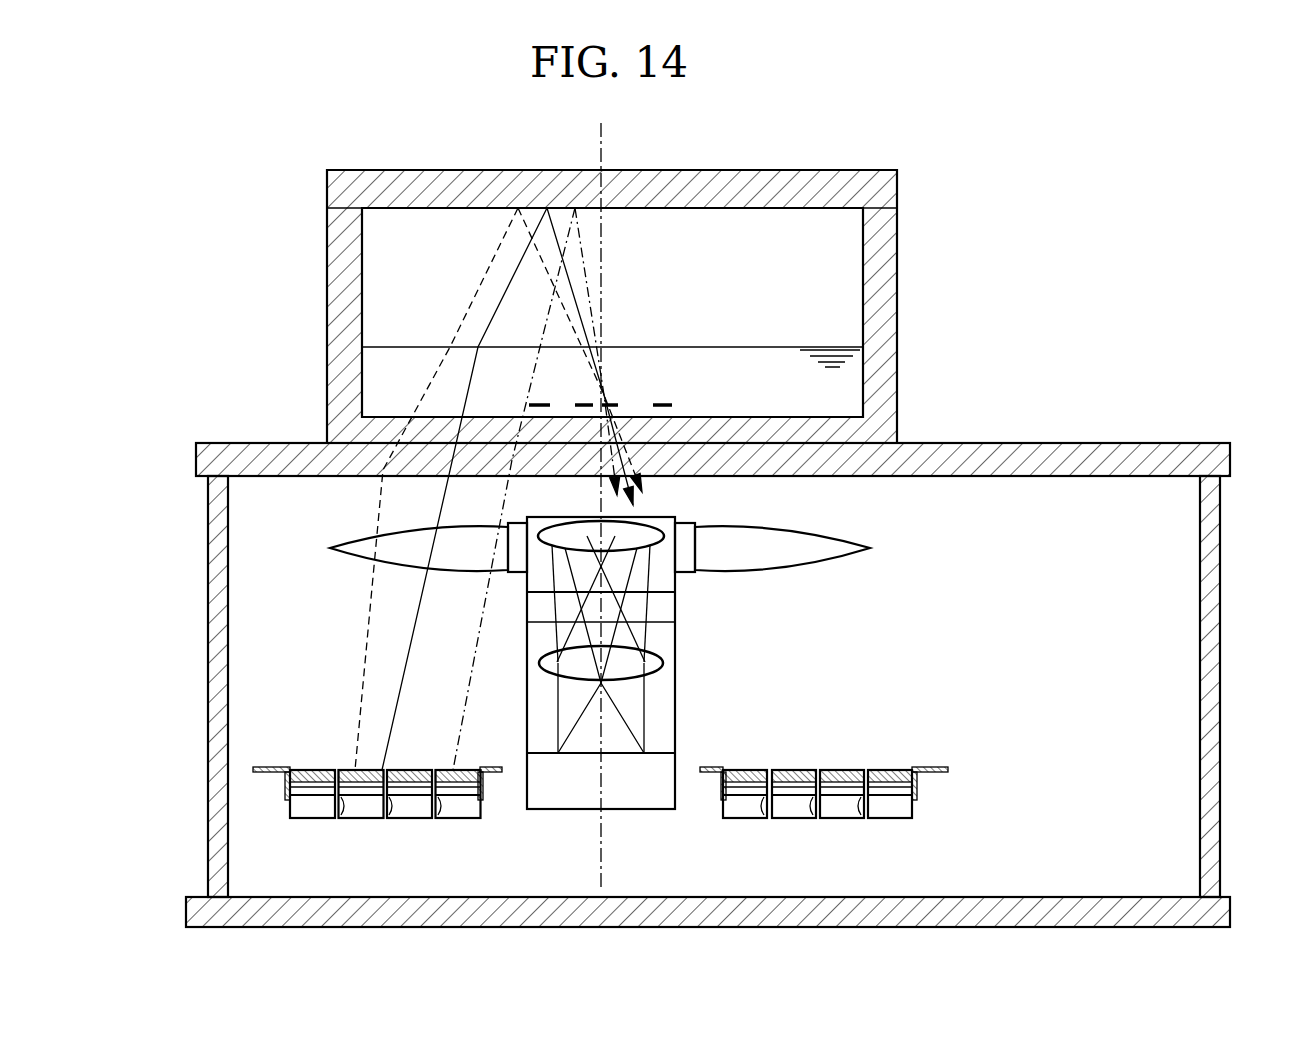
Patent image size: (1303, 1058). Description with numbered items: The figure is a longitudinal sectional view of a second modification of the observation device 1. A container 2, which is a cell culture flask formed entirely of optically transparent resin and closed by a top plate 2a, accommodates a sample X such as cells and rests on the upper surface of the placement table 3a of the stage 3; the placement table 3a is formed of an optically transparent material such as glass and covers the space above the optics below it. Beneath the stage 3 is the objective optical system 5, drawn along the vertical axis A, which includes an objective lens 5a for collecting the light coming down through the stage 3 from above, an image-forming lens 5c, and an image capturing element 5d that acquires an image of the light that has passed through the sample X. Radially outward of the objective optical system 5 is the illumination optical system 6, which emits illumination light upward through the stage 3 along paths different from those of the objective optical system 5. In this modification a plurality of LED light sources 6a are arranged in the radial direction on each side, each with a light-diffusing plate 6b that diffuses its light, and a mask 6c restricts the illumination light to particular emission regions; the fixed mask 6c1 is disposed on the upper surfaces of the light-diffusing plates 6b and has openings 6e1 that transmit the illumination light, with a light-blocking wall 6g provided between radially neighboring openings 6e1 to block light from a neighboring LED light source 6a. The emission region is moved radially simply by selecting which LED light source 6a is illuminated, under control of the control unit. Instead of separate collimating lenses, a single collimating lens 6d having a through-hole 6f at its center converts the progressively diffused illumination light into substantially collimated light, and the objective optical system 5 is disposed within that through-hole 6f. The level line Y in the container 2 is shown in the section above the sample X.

The observation device 1 is at (258, 146).
The container 2 is at (644, 430).
The top plate 2a is at (752, 170).
The stage 3 is at (713, 405).
The placement table 3a is at (1077, 443).
The objective optical system 5 is at (650, 685).
The objective lens 5a is at (655, 517).
The image-forming lens 5c is at (648, 652).
The image capturing element 5d is at (625, 757).
The illumination optical system 6 is at (600, 743).
The LED light source 6a is at (305, 820).
The light-diffusing plate 6b is at (315, 770).
The mask 6c is at (245, 764).
The fixed mask 6c1 is at (265, 767).
The collimating lens 6d is at (870, 548).
The opening 6e1 is at (291, 767).
The through-hole 6f is at (690, 560).
The light-blocking wall 6g is at (345, 803).
The optical axis A is at (603, 137).
The sample X is at (662, 403).
The liquid surface Y is at (813, 345).